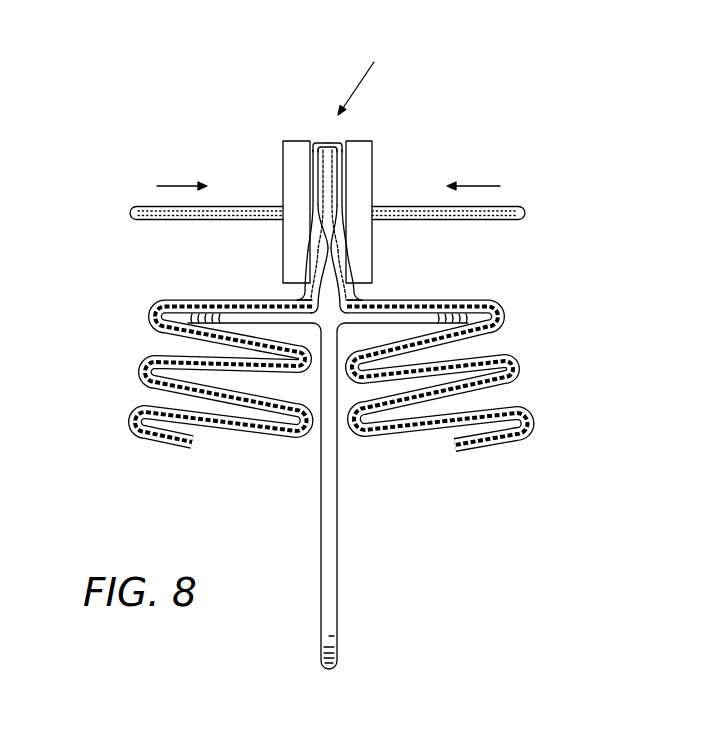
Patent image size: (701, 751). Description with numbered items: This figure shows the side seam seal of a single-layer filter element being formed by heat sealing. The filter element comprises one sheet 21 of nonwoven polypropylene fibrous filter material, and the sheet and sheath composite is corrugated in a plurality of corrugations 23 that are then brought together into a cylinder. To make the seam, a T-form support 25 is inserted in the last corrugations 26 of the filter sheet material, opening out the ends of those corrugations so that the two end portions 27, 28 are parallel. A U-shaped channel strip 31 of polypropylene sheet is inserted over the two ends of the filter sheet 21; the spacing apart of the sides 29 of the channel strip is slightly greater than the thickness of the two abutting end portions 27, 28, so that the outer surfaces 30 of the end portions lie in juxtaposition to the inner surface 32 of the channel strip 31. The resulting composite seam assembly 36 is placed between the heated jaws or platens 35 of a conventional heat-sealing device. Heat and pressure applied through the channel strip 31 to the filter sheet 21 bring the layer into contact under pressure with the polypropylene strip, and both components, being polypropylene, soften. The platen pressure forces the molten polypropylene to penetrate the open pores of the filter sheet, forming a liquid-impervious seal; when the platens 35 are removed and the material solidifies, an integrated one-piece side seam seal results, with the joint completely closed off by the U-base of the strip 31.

The sheet 21 is at (343, 270).
The corrugations 23 is at (503, 316).
The T-form support 25 is at (330, 583).
The last corrugations 26 is at (304, 292).
The end portion 27 is at (323, 143).
The end portion 28 is at (337, 143).
The sides 29 is at (393, 178).
The outer surfaces 30 is at (312, 210).
The channel strip 31 is at (328, 143).
The inner surface 32 is at (343, 208).
The platens 35 is at (283, 149).
The composite seam assembly 36 is at (362, 70).